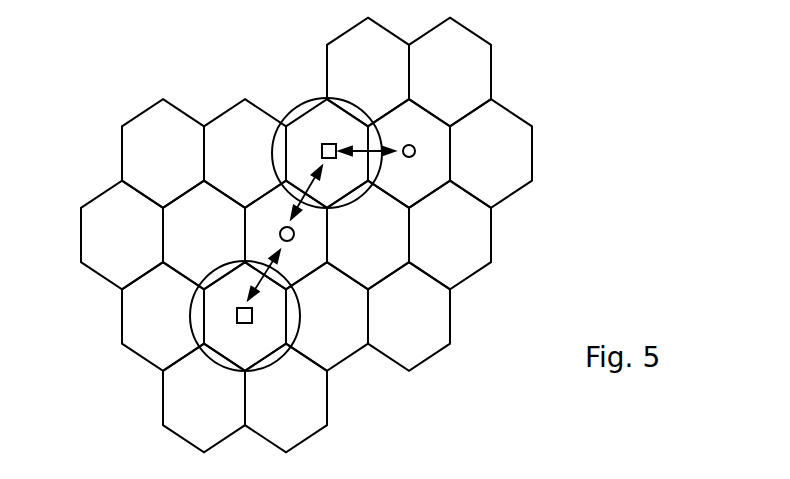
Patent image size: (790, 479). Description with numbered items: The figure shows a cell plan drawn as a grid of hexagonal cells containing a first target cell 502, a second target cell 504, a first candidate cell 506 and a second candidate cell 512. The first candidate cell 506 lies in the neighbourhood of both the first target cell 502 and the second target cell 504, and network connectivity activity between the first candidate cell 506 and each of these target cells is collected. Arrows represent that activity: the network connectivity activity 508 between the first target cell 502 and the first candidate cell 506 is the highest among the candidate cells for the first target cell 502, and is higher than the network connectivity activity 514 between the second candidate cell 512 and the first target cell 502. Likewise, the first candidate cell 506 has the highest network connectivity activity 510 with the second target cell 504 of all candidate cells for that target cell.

The first target cell 502 is at (262, 227).
The second target cell 504 is at (427, 156).
The first candidate cell 506 is at (318, 128).
The network connectivity activity 508 is at (303, 168).
The network connectivity activity 510 is at (388, 148).
The second candidate cell 512 is at (268, 324).
The network connectivity activity 514 is at (284, 260).